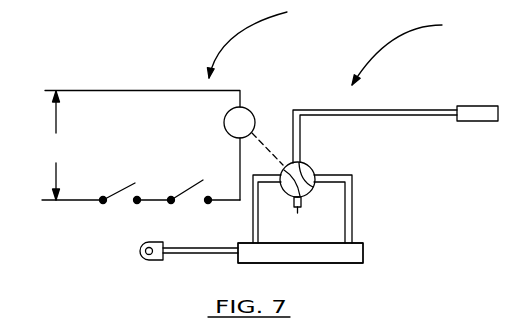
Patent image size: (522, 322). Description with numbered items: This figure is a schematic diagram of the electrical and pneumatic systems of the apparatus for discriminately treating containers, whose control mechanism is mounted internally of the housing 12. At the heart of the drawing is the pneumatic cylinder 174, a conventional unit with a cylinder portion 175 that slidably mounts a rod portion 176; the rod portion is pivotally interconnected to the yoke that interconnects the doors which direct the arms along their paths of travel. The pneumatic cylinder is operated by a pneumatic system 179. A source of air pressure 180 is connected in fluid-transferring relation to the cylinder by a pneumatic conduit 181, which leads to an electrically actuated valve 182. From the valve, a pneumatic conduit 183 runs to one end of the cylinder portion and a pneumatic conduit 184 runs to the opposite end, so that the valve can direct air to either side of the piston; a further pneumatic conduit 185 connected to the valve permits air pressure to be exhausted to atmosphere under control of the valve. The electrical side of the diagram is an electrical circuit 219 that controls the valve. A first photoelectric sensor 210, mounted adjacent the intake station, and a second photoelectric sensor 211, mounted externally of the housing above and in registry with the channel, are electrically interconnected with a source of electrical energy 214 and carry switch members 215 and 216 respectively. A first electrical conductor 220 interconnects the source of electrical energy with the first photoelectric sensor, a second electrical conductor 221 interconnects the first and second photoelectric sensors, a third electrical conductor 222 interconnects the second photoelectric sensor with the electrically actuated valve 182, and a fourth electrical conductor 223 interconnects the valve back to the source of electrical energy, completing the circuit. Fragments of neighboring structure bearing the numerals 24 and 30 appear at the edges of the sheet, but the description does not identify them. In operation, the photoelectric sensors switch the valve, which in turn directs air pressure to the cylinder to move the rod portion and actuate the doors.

The housing 12 is at (380, 321).
The wheel 24 is at (514, 170).
The frame member 30 is at (118, 321).
The pneumatic cylinder 174 is at (289, 252).
The cylinder portion 175 is at (337, 252).
The rod portion 176 is at (210, 253).
The pneumatic system 179 is at (411, 50).
The source of air pressure 180 is at (473, 105).
The pneumatic conduit 181 is at (370, 108).
The electrically actuated valve 182 is at (251, 110).
The pneumatic conduit 183 is at (352, 218).
The pneumatic conduit 184 is at (253, 219).
The pneumatic conduit 185 is at (297, 214).
The first photoelectric sensor 210 is at (127, 204).
The second photoelectric sensor 211 is at (192, 208).
The source of electrical energy 214 is at (56, 145).
The switch member 215 is at (117, 188).
The switch member 216 is at (195, 185).
The electrical circuit 219 is at (261, 39).
The first electrical conductor 220 is at (90, 203).
The second electrical conductor 221 is at (161, 197).
The third electrical conductor 222 is at (240, 163).
The fourth electrical conductor 223 is at (177, 90).